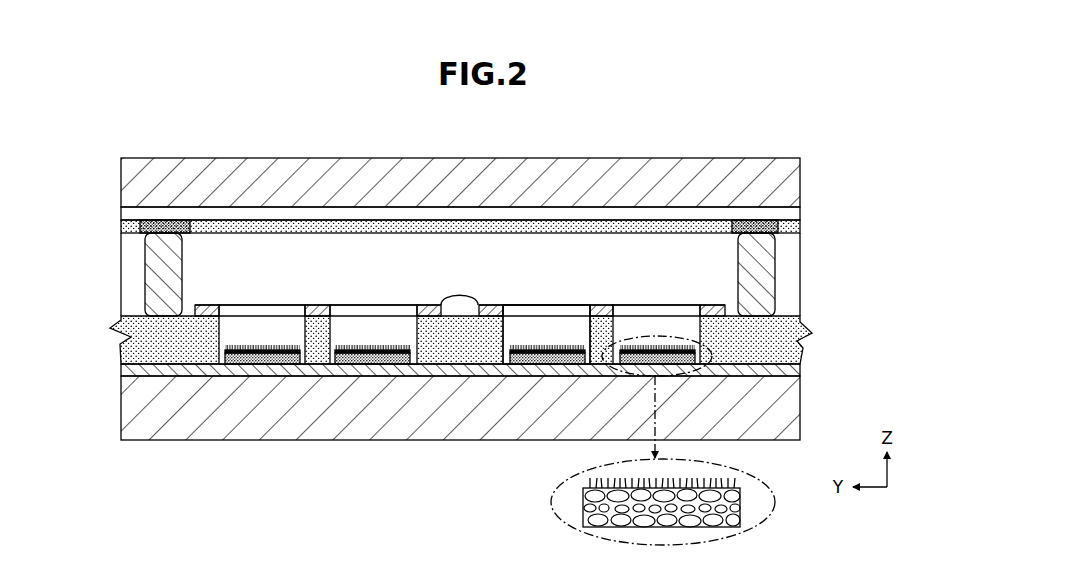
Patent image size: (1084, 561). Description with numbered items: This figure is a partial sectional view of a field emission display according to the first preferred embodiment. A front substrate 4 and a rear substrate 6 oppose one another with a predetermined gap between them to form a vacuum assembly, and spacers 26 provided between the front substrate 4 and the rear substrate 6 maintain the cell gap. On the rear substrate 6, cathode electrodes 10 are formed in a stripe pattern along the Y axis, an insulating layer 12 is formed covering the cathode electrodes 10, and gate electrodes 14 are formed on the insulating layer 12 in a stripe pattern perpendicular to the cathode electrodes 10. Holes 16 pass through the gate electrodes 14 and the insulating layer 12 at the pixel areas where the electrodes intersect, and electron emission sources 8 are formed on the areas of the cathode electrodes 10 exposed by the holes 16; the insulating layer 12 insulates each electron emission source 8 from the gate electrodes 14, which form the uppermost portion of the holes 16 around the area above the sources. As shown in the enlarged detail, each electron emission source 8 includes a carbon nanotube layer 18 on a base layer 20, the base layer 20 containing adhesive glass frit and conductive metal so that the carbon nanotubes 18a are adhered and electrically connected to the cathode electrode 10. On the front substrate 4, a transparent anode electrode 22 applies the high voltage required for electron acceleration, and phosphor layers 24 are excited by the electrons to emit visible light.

The front substrate 4 is at (181, 164).
The transparent anode electrode 22 is at (344, 212).
The phosphor layers 24 is at (620, 224).
The spacers 26 is at (152, 273).
The insulating layer 12 is at (800, 350).
The gate electrodes 14 is at (447, 298).
The electron emission sources 8 is at (265, 340).
The holes 16 is at (548, 326).
The cathode electrodes 10 is at (455, 375).
The rear substrate 6 is at (790, 408).
The carbon nanotube layer 18 is at (650, 489).
The carbon nanotubes 18a is at (590, 481).
The base layer 20 is at (738, 503).